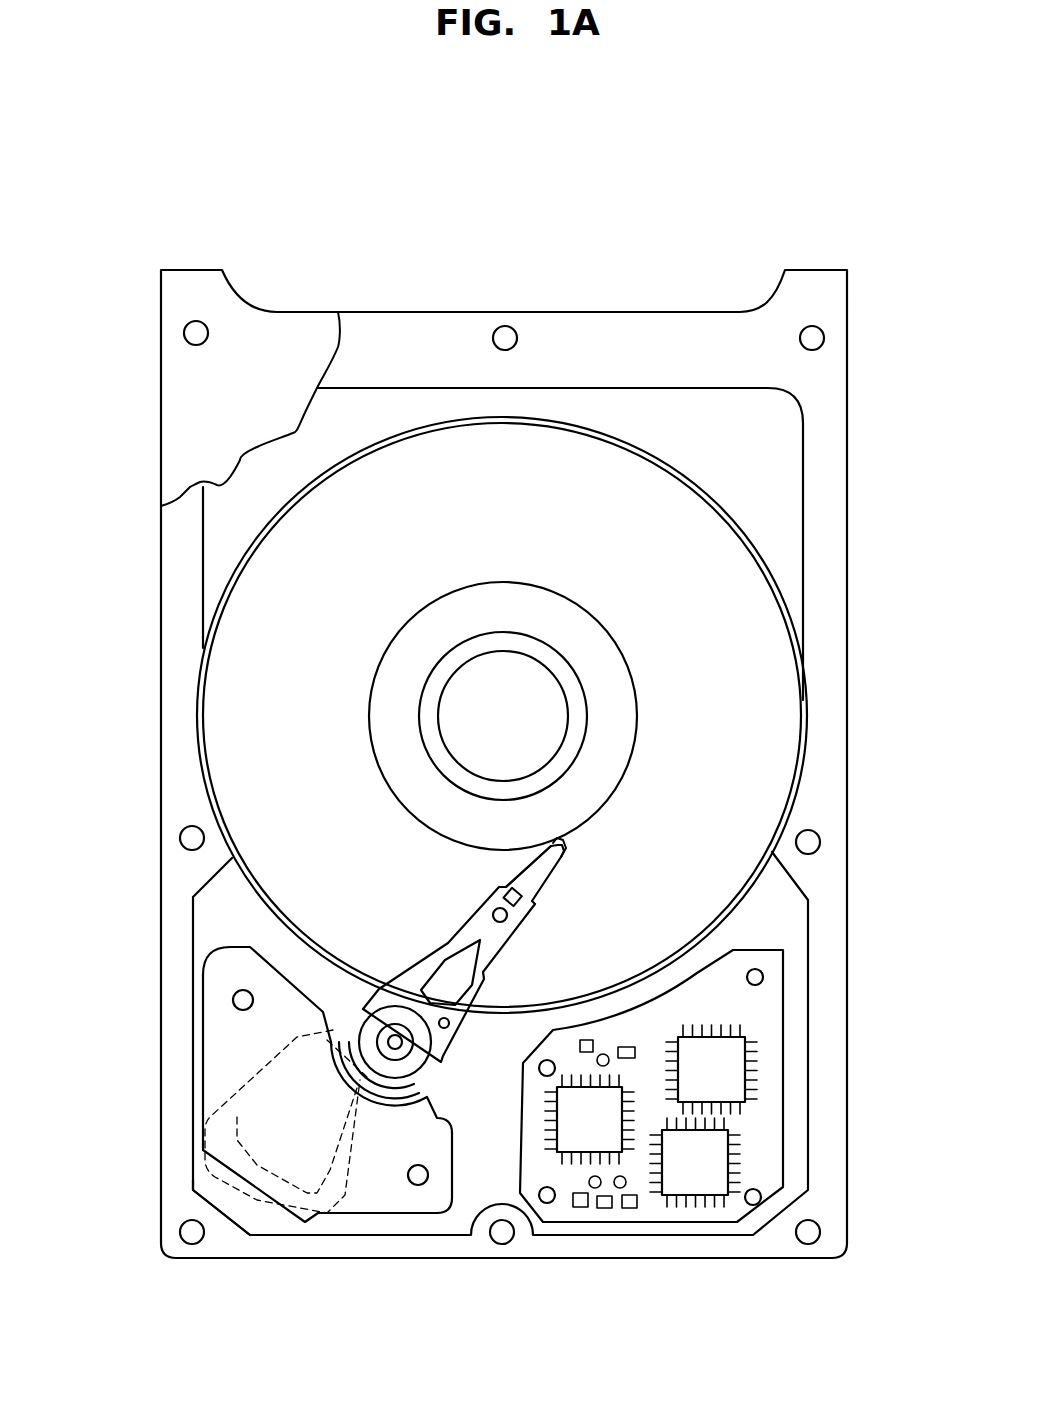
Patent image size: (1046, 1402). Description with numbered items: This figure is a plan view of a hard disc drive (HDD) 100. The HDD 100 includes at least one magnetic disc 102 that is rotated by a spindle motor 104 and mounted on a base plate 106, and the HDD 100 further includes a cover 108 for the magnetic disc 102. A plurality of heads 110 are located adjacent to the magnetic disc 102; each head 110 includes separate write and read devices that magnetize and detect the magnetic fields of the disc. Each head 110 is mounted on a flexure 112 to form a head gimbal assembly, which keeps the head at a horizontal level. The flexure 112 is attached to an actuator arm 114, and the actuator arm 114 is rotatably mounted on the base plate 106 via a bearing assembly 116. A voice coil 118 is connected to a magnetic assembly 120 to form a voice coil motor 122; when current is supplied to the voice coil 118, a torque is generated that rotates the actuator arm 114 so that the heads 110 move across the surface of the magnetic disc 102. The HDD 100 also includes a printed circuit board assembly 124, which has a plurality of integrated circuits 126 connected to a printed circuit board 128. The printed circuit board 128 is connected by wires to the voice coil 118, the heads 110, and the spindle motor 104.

The hard disc drive 100 is at (727, 243).
The magnetic disc 102 is at (232, 718).
The spindle motor 104 is at (532, 713).
The base plate 106 is at (788, 518).
The cover 108 is at (182, 403).
The head 110 is at (567, 848).
The flexure 112 is at (544, 878).
The actuator arm 114 is at (431, 973).
The bearing assembly 116 is at (421, 1049).
The voice coil 118 is at (338, 1170).
The magnetic assembly 120 is at (220, 1027).
The voice coil motor 122 is at (192, 1177).
The printed circuit board assembly 124 is at (762, 1012).
The integrated circuit 126 is at (705, 1178).
The printed circuit board 128 is at (772, 1075).